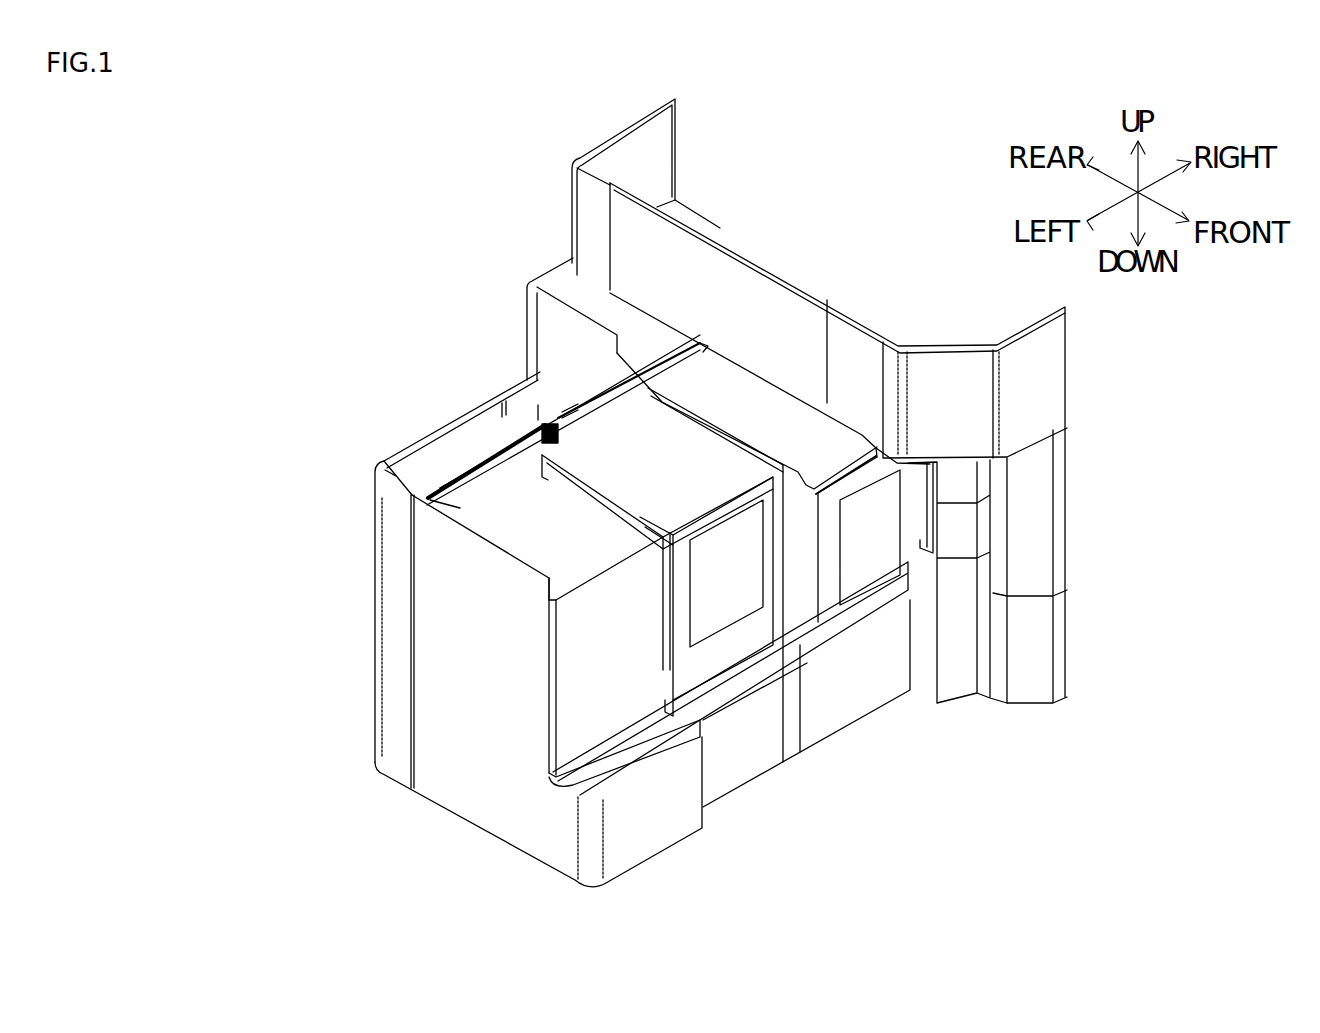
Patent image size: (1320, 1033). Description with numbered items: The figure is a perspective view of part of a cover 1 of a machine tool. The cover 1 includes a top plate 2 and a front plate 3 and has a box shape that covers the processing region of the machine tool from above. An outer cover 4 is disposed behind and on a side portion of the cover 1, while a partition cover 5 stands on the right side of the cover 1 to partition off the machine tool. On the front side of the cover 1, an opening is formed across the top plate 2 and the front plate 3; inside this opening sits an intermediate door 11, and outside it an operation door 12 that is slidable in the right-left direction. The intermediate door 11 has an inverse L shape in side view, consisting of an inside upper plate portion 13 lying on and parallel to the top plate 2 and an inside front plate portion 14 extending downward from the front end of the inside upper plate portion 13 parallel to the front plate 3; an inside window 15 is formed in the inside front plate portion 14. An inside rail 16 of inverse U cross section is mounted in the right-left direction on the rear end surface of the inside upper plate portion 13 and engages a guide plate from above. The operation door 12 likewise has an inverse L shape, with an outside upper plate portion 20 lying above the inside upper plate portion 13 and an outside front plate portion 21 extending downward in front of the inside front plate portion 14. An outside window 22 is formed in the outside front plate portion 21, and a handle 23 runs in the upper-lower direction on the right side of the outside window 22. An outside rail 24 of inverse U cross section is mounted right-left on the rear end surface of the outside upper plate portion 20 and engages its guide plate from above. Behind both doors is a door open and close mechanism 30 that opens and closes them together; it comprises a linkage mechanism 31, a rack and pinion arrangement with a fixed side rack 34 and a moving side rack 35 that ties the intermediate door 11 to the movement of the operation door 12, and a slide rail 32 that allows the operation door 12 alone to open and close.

The cover 1 is at (902, 810).
The top plate 2 is at (478, 513).
The front plate 3 is at (617, 683).
The outer cover 4 is at (393, 567).
The partition cover 5 is at (738, 273).
The intermediate door 11 is at (750, 673).
The operation door 12 is at (913, 690).
The inside upper plate portion 13 is at (630, 493).
The inside front plate portion 14 is at (698, 663).
The inside window 15 is at (708, 593).
The inside rail 16 is at (540, 460).
The outside upper plate portion 20 is at (770, 405).
The outside front plate portion 21 is at (830, 598).
The outside window 22 is at (858, 553).
The handle 23 is at (1053, 537).
The outside rail 24 is at (685, 368).
The door open and close mechanism 30 is at (538, 418).
The linkage mechanism 31 is at (540, 428).
The slide rail 32 is at (610, 407).
The fixed side rack 34 is at (477, 507).
The moving side rack 35 is at (603, 400).